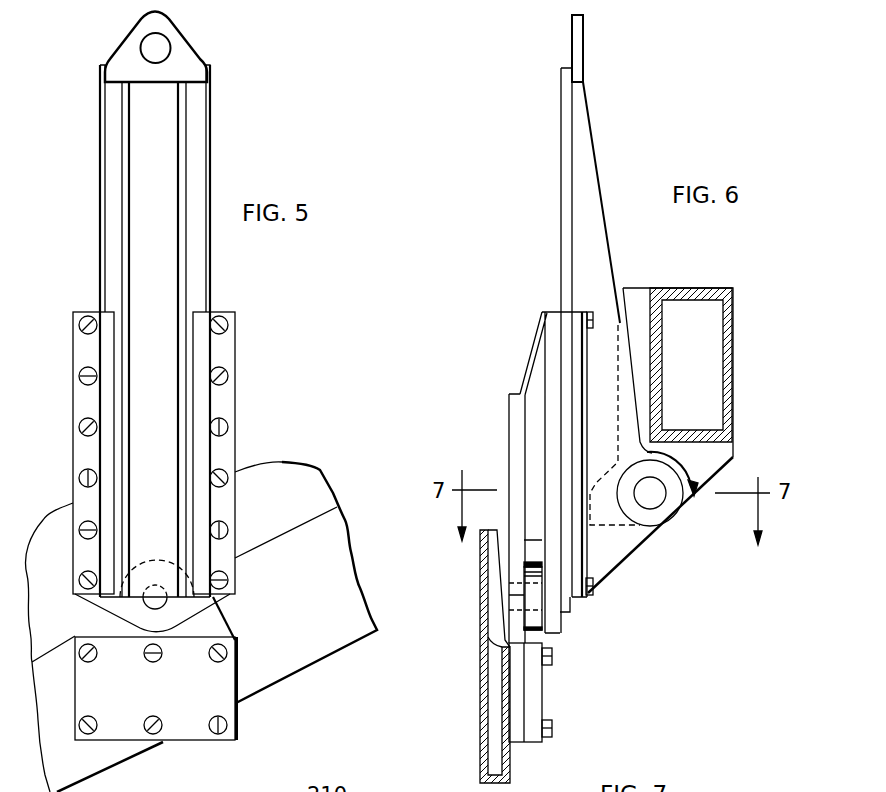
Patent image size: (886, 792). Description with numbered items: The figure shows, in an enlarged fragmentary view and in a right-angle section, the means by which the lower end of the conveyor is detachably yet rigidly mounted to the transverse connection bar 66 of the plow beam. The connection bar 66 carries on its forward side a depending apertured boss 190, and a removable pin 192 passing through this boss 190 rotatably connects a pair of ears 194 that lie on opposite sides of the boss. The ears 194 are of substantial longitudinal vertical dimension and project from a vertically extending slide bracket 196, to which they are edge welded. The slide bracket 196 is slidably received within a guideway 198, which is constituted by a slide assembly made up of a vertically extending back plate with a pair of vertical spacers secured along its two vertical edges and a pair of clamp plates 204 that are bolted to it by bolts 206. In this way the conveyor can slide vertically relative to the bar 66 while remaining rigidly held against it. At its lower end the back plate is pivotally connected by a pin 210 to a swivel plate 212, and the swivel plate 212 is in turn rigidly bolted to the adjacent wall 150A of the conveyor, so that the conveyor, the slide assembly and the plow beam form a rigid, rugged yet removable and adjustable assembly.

In FIG. 6, the transverse connection bar 66 is at (733, 312).
In FIG. 5, the wall of the conveyor 150A is at (350, 570).
In FIG. 6, the wall of the conveyor 150A is at (480, 655).
In FIG. 6, the depending apertured boss 190 is at (697, 483).
In FIG. 6, the removable pin 192 is at (657, 502).
In FIG. 5, the ears 194 is at (123, 137).
In FIG. 6, the ears 194 is at (603, 233).
In FIG. 5, the slide bracket 196 is at (203, 285).
In FIG. 5, the guideway 198 is at (119, 400).
In FIG. 5, the clamp plates 204 is at (80, 345).
In FIG. 5, the bolts 206 is at (233, 470).
In FIG. 6, the bolts 206 is at (590, 596).
In FIG. 5, the pin 210 is at (172, 606).
In FIG. 6, the pin 210 is at (542, 610).
In FIG. 5, the swivel plate 212 is at (233, 703).
In FIG. 6, the swivel plate 212 is at (535, 697).